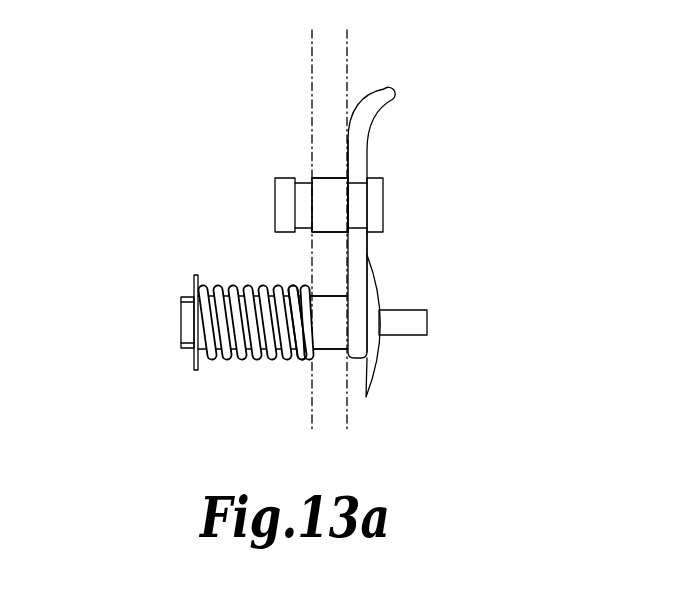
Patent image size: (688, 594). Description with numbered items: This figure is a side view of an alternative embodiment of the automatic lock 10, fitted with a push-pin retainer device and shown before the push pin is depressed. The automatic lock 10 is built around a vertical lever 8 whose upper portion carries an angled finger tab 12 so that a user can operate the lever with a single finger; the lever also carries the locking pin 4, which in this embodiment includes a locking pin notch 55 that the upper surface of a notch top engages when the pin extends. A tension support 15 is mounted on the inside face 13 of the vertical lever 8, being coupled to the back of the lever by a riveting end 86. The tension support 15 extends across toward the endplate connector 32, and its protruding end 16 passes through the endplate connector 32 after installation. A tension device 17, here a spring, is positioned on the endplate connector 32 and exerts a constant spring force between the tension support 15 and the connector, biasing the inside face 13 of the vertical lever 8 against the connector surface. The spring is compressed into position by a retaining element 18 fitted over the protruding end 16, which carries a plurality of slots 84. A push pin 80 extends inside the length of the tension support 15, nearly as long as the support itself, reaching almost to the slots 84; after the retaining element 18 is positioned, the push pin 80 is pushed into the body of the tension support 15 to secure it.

The automatic lock 10 is at (262, 117).
The inside face 13 is at (345, 163).
The endplate connector 32 is at (347, 55).
The finger tab 12 is at (397, 90).
The locking pin notch 55 is at (302, 178).
The locking pin 4 is at (277, 180).
The vertical lever 8 is at (368, 242).
The retaining element 18 is at (193, 278).
The slots 84 is at (182, 343).
The push pin 80 is at (422, 310).
The riveting end 86 is at (377, 367).
The protruding end 16 is at (223, 357).
The tension device 17 is at (295, 358).
The tension support 15 is at (328, 340).